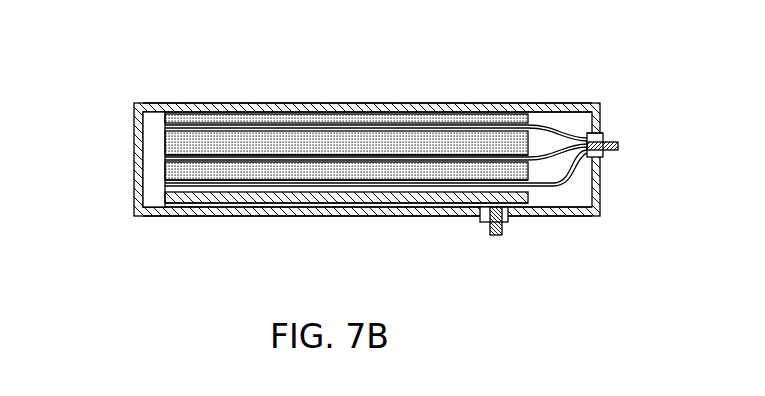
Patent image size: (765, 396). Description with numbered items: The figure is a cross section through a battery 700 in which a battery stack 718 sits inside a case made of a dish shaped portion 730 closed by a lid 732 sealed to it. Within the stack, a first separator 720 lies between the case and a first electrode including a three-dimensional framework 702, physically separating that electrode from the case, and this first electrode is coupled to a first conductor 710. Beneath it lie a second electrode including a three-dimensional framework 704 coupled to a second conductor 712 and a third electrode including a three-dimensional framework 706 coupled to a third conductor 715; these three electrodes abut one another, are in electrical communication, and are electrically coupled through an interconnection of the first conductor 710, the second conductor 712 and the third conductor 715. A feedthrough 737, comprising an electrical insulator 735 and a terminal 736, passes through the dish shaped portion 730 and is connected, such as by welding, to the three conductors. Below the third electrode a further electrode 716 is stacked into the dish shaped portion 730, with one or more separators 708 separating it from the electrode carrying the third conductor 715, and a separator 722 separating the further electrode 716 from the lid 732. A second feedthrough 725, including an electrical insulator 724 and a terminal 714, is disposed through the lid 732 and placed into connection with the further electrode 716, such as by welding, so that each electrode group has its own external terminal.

The energy storage device 700 is at (169, 68).
The first electrode including a 3D framework 702 is at (273, 127).
The second electrode including a 3D framework 704 is at (310, 137).
The third electrode including a 3D framework 706 is at (363, 162).
The separator 708 is at (405, 188).
The first conductor 710 is at (278, 128).
The second conductor 712 is at (335, 155).
The terminal 714 is at (493, 235).
The third conductor 715 is at (386, 183).
The further electrode 716 is at (458, 198).
The battery stack 718 is at (160, 148).
The first separator 720 is at (255, 113).
The separator 722 is at (247, 205).
The electrical insulator 724 is at (505, 222).
The feedthrough 725 is at (514, 223).
The dish shaped portion 730 is at (500, 103).
The lid 732 is at (185, 218).
The electrical insulator 735 is at (606, 138).
The terminal 736 is at (614, 152).
The feedthrough 737 is at (609, 126).